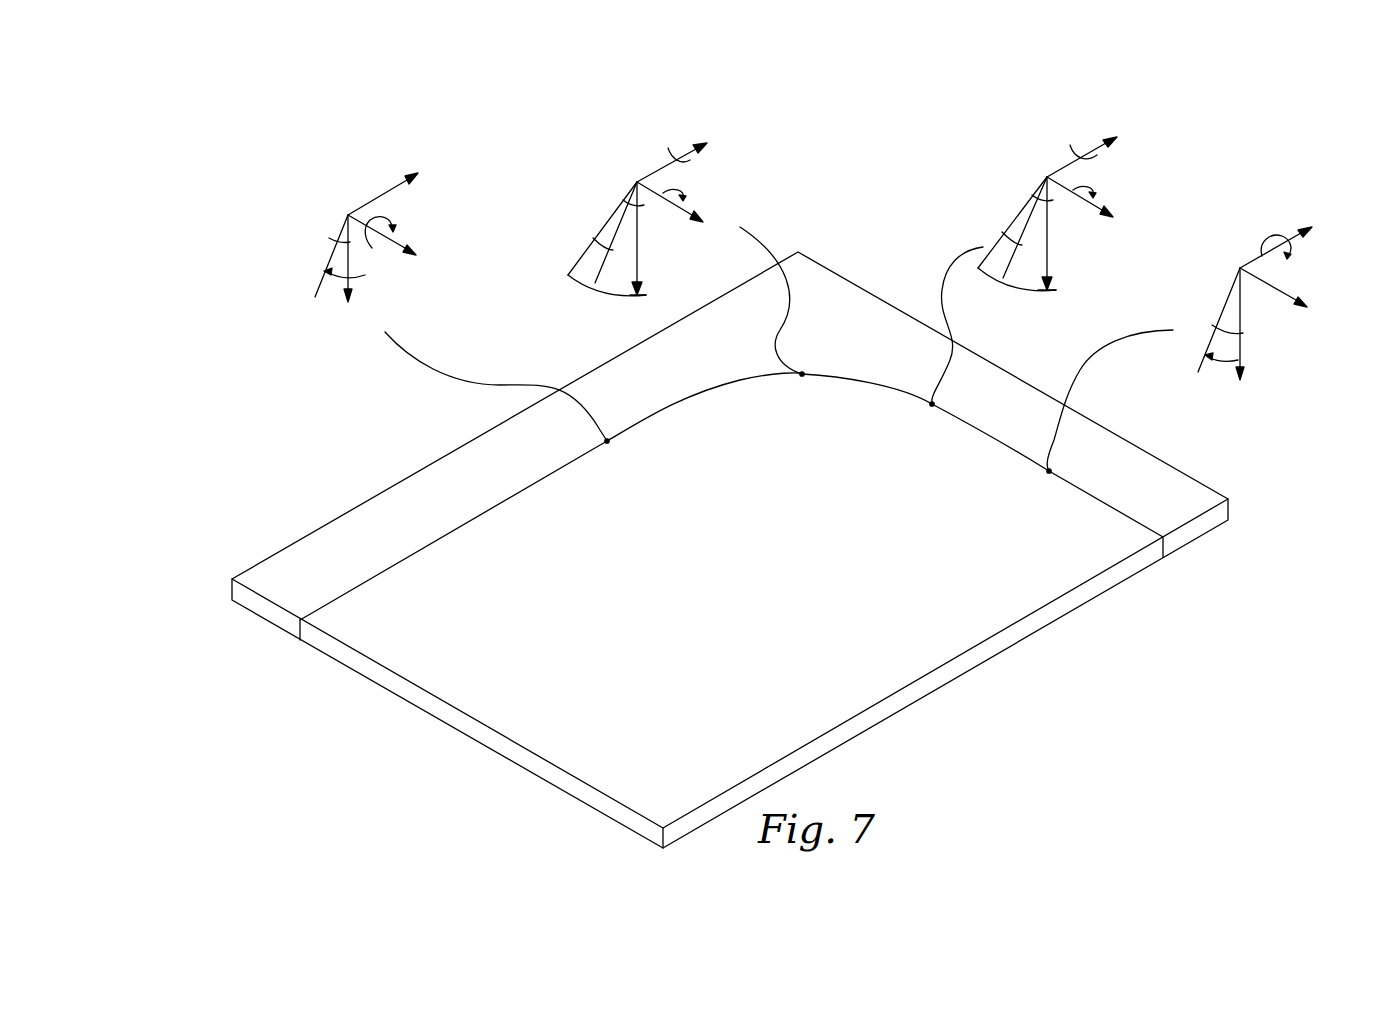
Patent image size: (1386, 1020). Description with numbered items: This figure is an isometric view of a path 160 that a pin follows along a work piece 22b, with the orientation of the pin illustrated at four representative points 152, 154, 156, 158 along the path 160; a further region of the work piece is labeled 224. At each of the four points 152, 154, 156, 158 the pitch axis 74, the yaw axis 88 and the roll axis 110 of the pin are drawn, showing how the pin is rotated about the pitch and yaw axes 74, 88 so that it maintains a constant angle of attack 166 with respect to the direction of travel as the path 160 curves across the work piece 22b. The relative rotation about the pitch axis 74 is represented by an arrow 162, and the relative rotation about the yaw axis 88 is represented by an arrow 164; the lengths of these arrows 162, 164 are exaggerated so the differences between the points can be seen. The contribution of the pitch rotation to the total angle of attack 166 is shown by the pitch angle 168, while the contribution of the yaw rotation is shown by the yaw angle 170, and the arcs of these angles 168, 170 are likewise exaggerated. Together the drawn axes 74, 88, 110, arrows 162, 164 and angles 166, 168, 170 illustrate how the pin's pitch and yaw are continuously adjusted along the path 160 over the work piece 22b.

The work piece 22b is at (1177, 487).
The path 160 is at (1207, 513).
The plate edge region 224 is at (922, 645).
The representative point 152 is at (1049, 471).
The representative point 154 is at (932, 404).
The representative point 156 is at (802, 374).
The representative point 158 is at (607, 441).
The pitch axis 74 is at (381, 195).
The yaw axis 88 is at (398, 240).
The roll axis 110 is at (350, 256).
The arrow 162 is at (685, 155).
The arrow 164 is at (375, 217).
The angle of attack 166 is at (340, 278).
The pitch angle 168 is at (600, 235).
The yaw angle 170 is at (335, 240).